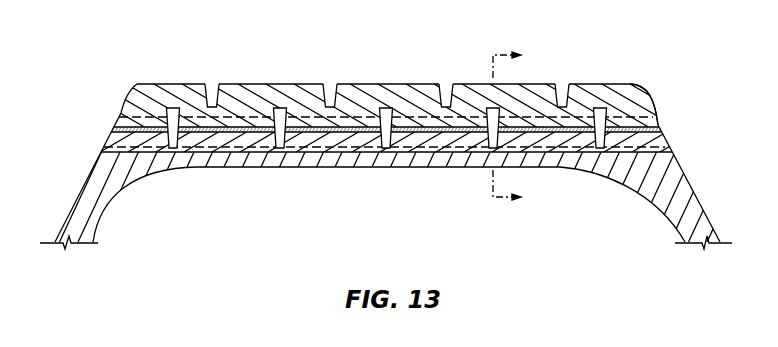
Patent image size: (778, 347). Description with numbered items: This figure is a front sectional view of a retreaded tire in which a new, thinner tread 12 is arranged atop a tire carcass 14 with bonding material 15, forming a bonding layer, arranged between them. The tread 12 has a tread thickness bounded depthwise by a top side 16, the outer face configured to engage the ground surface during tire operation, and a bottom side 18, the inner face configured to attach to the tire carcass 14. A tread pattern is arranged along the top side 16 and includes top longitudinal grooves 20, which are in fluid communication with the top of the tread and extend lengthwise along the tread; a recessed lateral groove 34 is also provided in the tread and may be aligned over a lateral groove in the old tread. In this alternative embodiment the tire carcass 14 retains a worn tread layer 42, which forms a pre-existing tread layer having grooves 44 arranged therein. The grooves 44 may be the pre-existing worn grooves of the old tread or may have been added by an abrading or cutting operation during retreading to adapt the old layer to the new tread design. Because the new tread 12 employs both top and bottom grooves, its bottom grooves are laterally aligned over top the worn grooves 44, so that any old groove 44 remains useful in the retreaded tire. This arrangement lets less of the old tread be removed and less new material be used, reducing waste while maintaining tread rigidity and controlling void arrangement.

The tread 12 is at (132, 98).
The tire carcass 14 is at (107, 197).
The bonding material 15 is at (556, 135).
The top side 16 is at (358, 83).
The bottom side 18 is at (648, 127).
The top longitudinal grooves 20 is at (570, 85).
The recessed lateral groove 34 is at (130, 121).
The worn tread layer 42 is at (267, 150).
The grooves 44 is at (185, 143).